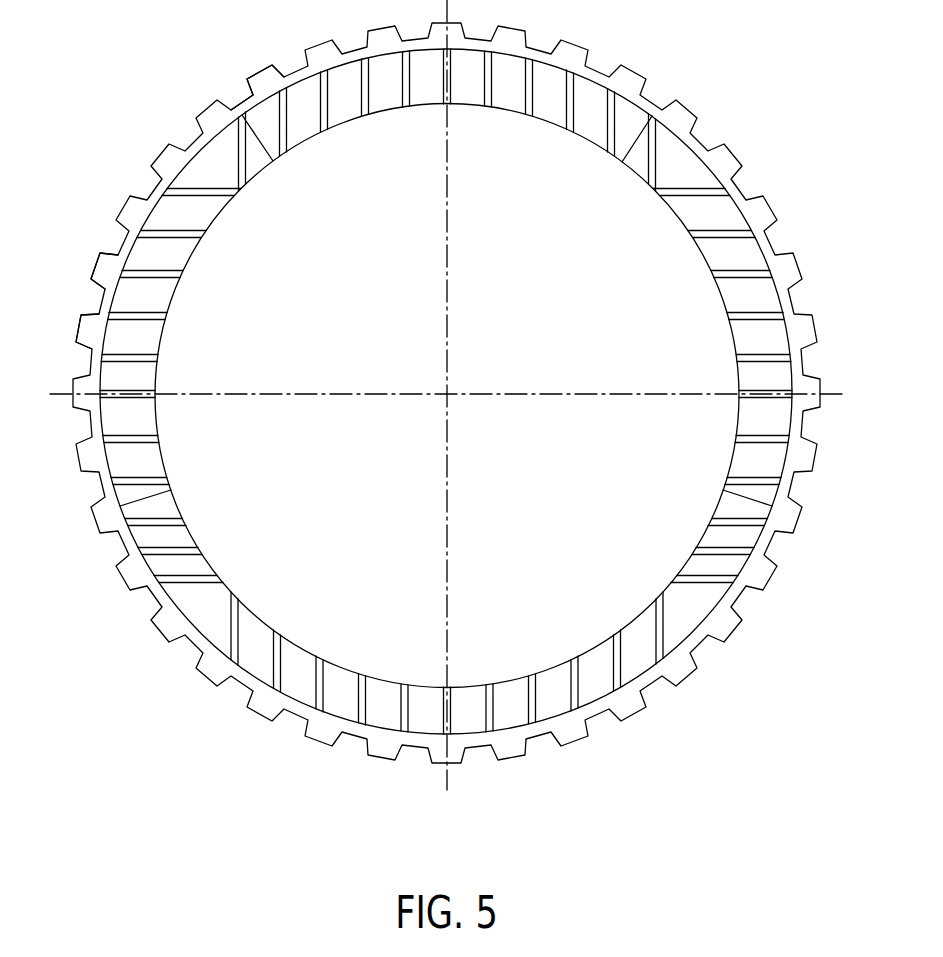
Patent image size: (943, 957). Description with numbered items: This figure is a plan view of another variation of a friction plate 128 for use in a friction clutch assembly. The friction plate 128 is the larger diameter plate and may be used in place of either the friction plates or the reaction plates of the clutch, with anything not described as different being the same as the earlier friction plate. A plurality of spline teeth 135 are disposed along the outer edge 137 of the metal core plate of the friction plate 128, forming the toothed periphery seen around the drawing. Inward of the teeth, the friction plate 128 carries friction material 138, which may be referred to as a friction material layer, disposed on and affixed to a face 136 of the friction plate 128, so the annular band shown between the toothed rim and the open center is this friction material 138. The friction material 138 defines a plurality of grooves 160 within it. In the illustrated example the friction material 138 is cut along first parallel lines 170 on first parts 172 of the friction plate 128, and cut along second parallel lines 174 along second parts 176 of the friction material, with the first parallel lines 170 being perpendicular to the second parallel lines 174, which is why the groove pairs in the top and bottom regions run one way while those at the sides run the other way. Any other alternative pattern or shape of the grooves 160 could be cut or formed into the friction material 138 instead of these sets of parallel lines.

The friction plate 128 is at (112, 97).
The spline teeth 135 is at (258, 40).
The face 136 is at (220, 128).
The outer edge 137 is at (78, 326).
The friction material 138 is at (213, 163).
The grooves 160 is at (640, 217).
The first parallel lines 170 is at (367, 108).
The first parts 172 is at (466, 130).
The second parallel lines 174 is at (828, 485).
The second parts 176 is at (712, 423).